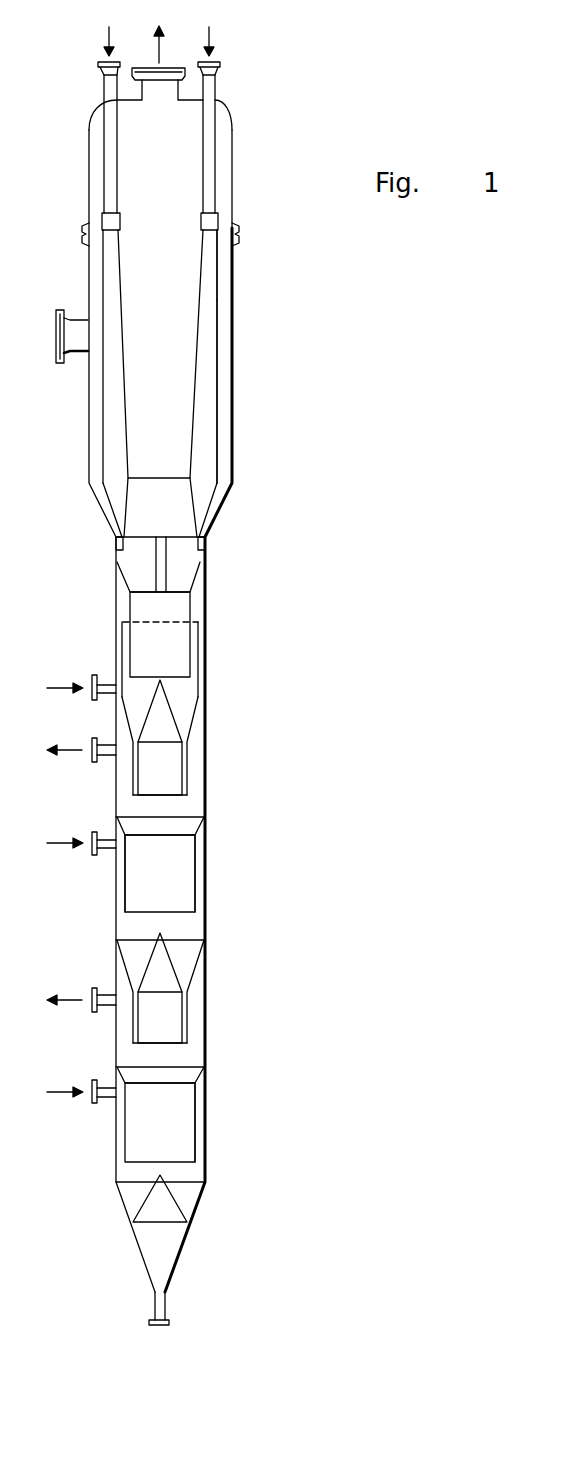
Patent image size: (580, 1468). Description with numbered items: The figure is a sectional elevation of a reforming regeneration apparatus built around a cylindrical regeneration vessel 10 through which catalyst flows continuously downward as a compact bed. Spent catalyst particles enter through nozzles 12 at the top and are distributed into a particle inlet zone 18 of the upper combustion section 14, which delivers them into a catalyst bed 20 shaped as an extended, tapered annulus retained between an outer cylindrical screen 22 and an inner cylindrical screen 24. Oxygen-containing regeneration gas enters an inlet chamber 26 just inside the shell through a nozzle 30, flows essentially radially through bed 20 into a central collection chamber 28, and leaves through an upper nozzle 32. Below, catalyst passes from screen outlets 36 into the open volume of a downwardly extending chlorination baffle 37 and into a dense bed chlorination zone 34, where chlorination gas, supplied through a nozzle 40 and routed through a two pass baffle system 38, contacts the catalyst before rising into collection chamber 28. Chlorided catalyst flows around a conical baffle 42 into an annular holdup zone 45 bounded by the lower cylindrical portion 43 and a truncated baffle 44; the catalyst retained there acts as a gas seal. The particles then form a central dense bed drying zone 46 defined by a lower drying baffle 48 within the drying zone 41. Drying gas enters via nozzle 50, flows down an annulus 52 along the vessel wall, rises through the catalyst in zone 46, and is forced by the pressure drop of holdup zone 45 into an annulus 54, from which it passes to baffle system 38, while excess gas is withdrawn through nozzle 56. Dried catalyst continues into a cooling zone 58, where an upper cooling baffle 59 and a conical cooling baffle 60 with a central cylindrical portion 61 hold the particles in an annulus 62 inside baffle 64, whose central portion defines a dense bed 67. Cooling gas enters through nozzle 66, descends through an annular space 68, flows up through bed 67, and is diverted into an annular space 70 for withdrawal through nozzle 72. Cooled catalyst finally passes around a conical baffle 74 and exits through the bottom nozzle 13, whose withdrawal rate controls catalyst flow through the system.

The regeneration vessel 10 is at (224, 627).
The nozzles 12 is at (103, 90).
The bottom nozzle 13 is at (166, 1310).
The upper combustion section 14 is at (233, 347).
The particle inlet zone 18 is at (216, 220).
The catalyst bed 20 is at (207, 312).
The cylindrical screen 22 is at (217, 397).
The cylindrical screen 24 is at (123, 385).
The inlet chamber 26 is at (223, 260).
The central collection chamber 28 is at (183, 346).
The nozzle 30 is at (80, 318).
The upper nozzle 32 is at (193, 72).
The chlorination zone 34 is at (170, 610).
The screen outlets 36 is at (128, 548).
The chlorination baffle 37 is at (190, 610).
The two pass baffle system 38 is at (120, 640).
The nozzle 40 is at (108, 677).
The drying zone 41 is at (212, 829).
The conical baffle 42 is at (173, 710).
The lower cylindrical portion 43 is at (173, 787).
The truncated baffle 44 is at (187, 758).
The annular holdup zone 45 is at (133, 770).
The central dense bed drying zone 46 is at (178, 878).
The lower drying baffle 48 is at (197, 898).
The nozzle 50 is at (103, 850).
The annulus 52 is at (125, 895).
The annulus 54 is at (197, 770).
The nozzle 56 is at (108, 737).
The cooling zone 58 is at (208, 1080).
The upper cooling baffle 59 is at (193, 975).
The conical cooling baffle 60 is at (173, 963).
The central cylindrical portion 61 is at (181, 1027).
The annulus 62 is at (132, 1022).
The upper cooling baffle 64 is at (197, 1102).
The nozzle 66 is at (107, 1098).
The central dense bed of dried catalyst 67 is at (180, 1128).
The annular space 68 is at (197, 1150).
The annular space 70 is at (197, 1027).
The nozzle 72 is at (107, 987).
The conical baffle 74 is at (178, 1205).